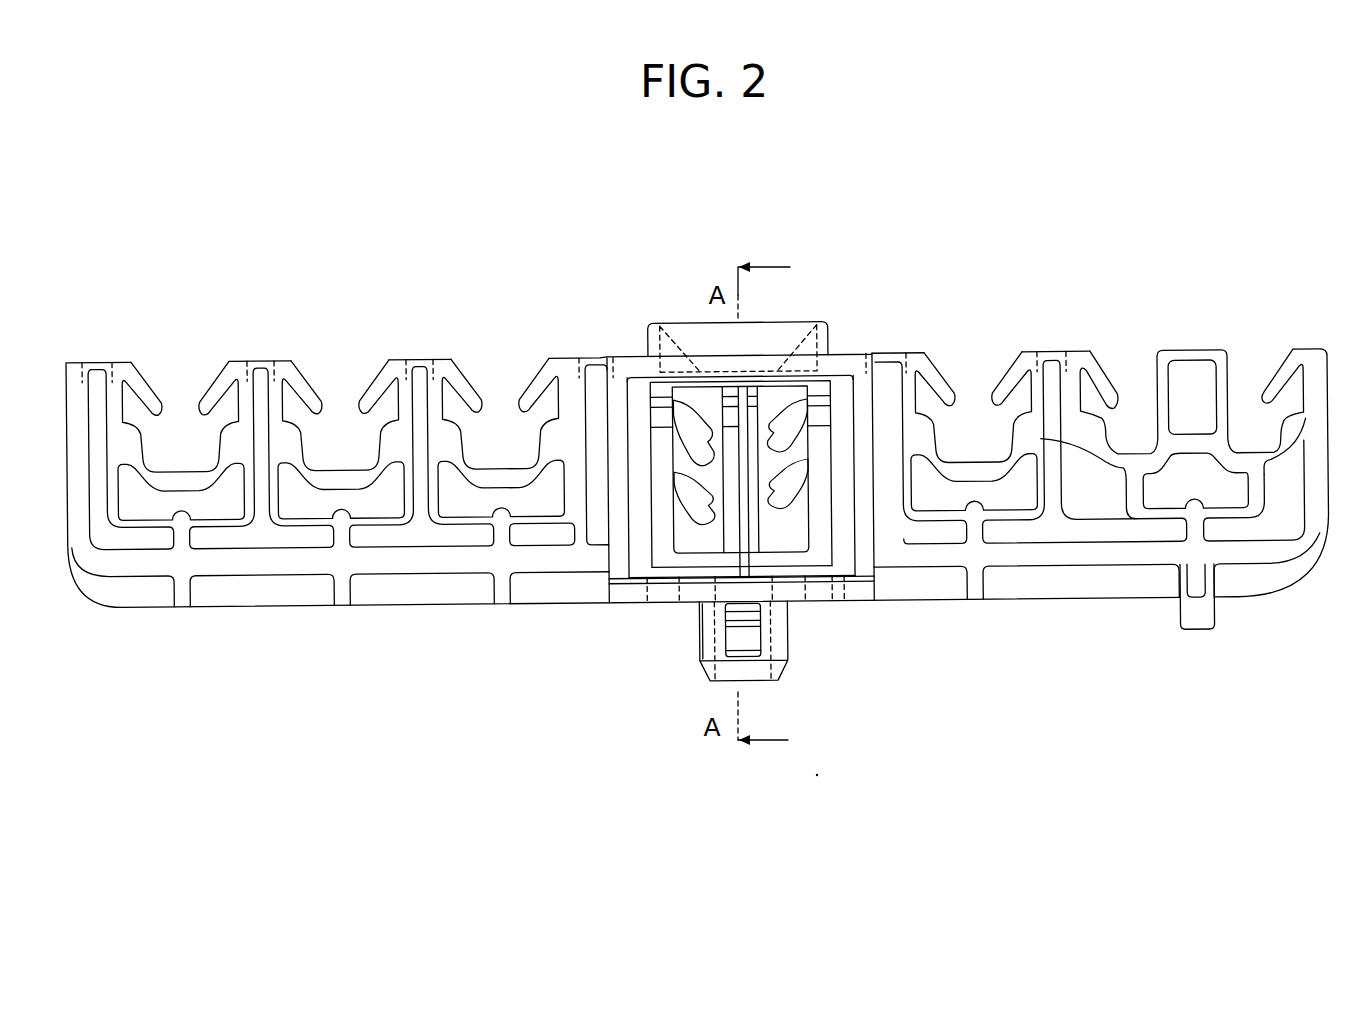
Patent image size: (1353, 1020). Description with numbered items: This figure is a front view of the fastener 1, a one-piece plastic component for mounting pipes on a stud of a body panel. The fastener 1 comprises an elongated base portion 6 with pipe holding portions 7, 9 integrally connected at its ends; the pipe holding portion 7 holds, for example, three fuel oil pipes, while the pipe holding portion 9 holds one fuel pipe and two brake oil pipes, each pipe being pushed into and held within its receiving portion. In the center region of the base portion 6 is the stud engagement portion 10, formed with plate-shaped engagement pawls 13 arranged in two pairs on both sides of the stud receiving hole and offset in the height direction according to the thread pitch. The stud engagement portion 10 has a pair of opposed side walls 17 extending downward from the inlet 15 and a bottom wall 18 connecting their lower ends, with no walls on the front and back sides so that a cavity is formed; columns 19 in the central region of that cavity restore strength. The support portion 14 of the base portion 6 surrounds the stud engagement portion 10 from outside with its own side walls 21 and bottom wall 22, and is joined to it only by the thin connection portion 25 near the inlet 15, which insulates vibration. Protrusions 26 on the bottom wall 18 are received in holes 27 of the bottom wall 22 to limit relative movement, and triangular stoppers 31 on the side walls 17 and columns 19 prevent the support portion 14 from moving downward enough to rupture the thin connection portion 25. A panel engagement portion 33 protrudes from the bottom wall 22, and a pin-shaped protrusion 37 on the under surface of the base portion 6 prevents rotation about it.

The fastener 1 is at (840, 243).
The base portion 6 is at (411, 571).
The pipe holding portion 7 is at (107, 350).
The pipe holding portion 9 is at (1320, 335).
The stud engagement portion 10 is at (617, 478).
The engagement pawls 13 is at (708, 441).
The support portion 14 is at (624, 560).
The inlet 15 is at (668, 335).
The side walls 17 is at (690, 450).
The bottom wall 18 is at (781, 567).
The columns 19 is at (748, 398).
The side walls 21 is at (604, 560).
The bottom wall 22 is at (640, 612).
The thin connection portion 25 is at (842, 352).
The protrusions 26 is at (640, 578).
The holes 27 is at (830, 585).
The stoppers 31 is at (673, 345).
The panel engagement portion 33 is at (697, 665).
The pin-shaped protrusion 37 is at (1199, 622).